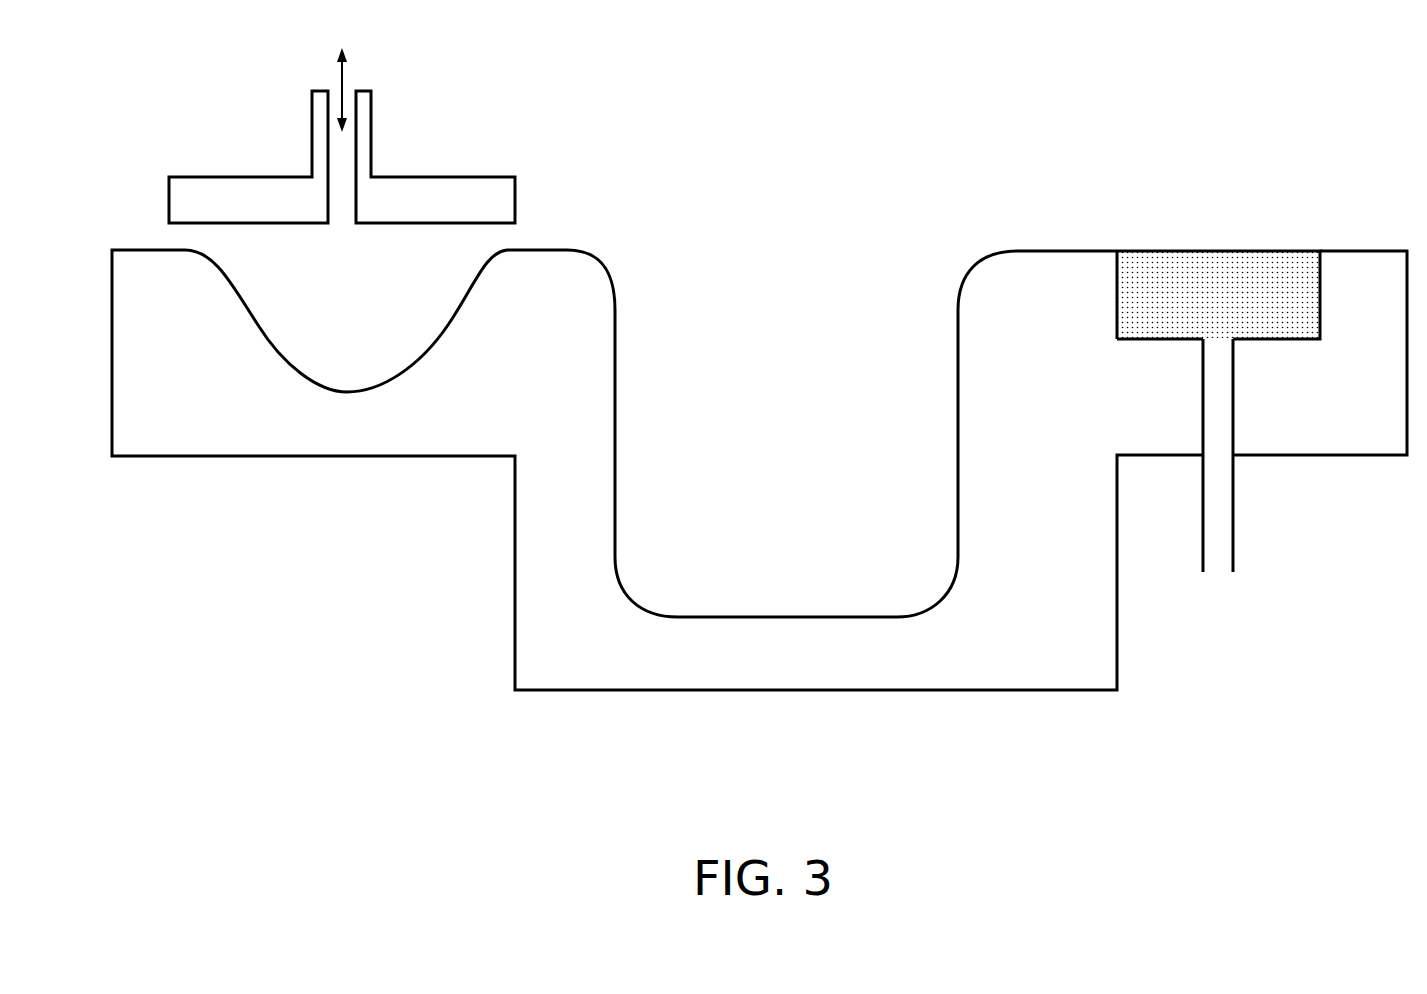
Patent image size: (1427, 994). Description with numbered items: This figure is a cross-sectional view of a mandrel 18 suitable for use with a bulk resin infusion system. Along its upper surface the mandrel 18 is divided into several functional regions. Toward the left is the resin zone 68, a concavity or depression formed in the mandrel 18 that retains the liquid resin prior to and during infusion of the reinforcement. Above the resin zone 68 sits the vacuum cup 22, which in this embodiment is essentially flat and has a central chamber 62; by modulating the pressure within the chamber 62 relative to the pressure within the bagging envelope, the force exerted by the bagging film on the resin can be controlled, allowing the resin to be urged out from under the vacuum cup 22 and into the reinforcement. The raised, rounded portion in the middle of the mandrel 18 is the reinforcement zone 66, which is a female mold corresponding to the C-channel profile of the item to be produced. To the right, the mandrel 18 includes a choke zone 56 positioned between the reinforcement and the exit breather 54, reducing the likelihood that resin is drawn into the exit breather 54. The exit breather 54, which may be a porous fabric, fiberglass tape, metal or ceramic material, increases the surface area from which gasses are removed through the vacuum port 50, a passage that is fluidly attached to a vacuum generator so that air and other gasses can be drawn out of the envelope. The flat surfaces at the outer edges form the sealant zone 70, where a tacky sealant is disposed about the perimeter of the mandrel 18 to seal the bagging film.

The vacuum cup 22 is at (372, 105).
The chamber 62 is at (352, 246).
The sealant zone 70 is at (154, 258).
The resin zone 68 is at (349, 315).
The reinforcement zone 66 is at (788, 249).
The mandrel 18 is at (1088, 250).
The choke zone 56 is at (1095, 265).
The exit breather 54 is at (1116, 312).
The vacuum port 50 is at (1203, 515).